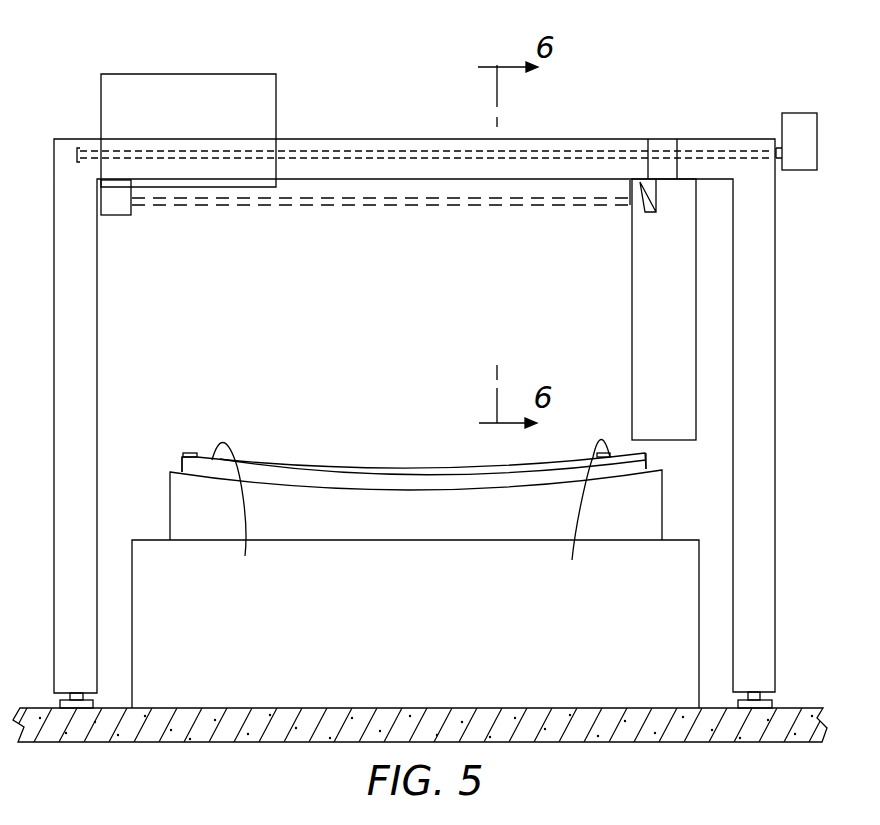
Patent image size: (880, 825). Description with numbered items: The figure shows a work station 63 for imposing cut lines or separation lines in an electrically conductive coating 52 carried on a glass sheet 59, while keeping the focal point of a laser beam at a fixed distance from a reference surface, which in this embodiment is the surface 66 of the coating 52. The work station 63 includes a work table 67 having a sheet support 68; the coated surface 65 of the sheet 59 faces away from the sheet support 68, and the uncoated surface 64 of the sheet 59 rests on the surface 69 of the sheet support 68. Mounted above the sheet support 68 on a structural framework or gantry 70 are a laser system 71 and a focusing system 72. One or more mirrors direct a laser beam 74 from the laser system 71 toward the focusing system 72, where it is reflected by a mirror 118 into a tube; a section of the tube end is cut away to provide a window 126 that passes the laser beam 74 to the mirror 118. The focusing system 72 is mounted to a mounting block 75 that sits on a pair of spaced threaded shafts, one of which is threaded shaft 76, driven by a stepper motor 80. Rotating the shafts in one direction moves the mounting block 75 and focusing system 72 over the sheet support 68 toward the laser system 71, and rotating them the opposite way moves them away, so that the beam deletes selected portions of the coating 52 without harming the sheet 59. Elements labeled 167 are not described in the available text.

The coating 52 is at (417, 468).
The sheet 59 is at (205, 451).
The work station 63 is at (795, 403).
The uncoated surface 64 is at (400, 497).
The surface 65 is at (193, 455).
The surface 66 is at (303, 463).
The work table 67 is at (678, 538).
The sheet support 68 is at (170, 518).
The surface 69 is at (182, 467).
The gantry 70 is at (775, 260).
The laser system 71 is at (181, 73).
The focusing system 72 is at (632, 325).
The laser beam 74 is at (355, 207).
The mounting block 75 is at (662, 150).
The threaded shaft 76 is at (569, 138).
The stepper motor 80 is at (800, 113).
The mirror 118 is at (652, 207).
The window 126 is at (630, 193).
The hold-down arm 167 is at (411, 519).